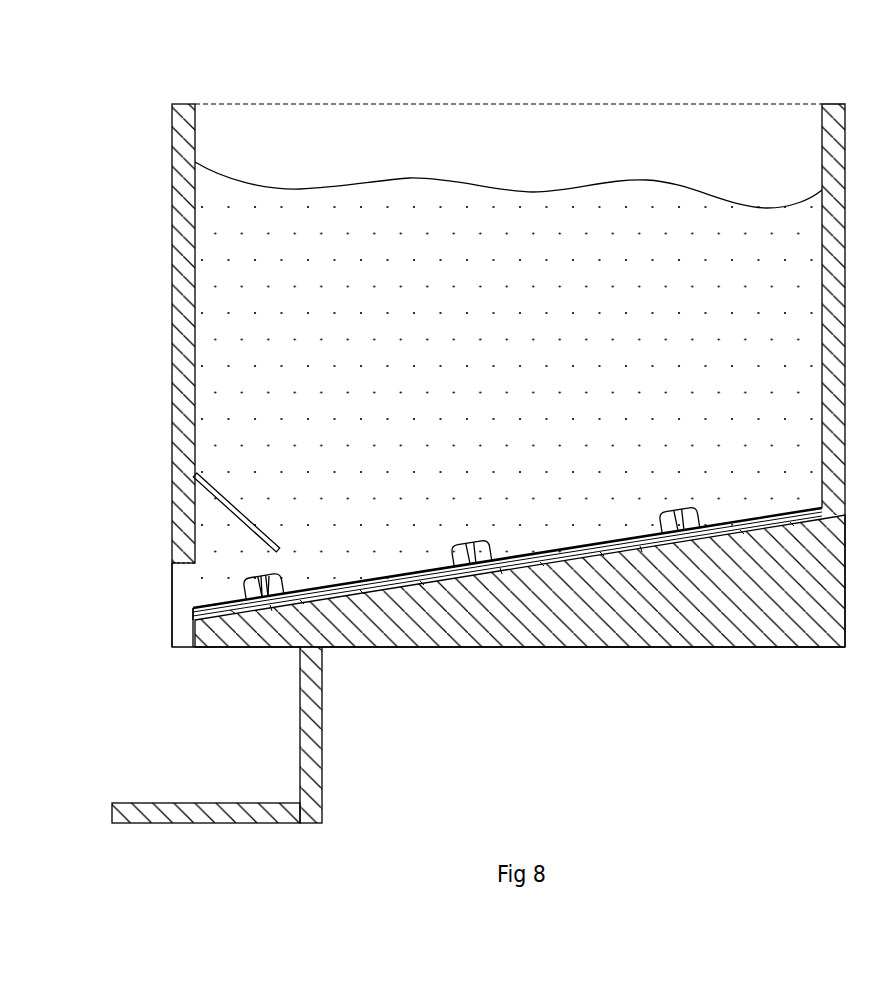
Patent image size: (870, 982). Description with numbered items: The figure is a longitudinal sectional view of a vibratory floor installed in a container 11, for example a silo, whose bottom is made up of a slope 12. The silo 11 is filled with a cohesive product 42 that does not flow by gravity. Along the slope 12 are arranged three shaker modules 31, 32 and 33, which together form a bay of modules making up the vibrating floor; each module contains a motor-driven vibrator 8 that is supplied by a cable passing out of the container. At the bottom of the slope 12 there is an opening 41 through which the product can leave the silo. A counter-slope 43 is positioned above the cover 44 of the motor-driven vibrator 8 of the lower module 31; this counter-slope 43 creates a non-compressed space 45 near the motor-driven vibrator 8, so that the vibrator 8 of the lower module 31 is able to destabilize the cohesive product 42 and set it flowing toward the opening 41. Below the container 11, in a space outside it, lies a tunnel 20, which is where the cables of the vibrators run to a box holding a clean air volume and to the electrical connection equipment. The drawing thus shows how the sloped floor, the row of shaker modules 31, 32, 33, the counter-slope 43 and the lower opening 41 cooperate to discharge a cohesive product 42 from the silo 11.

The container 11 is at (627, 123).
The cohesive product 42 is at (489, 285).
The counter-slope 43 is at (224, 490).
The non-compressed space 45 is at (218, 532).
The opening 41 is at (195, 586).
The slope 12 is at (566, 622).
The shaker module 31 is at (340, 582).
The cover 44 is at (245, 579).
The motor-driven vibrator 8 is at (271, 576).
The shaker module 32 is at (510, 551).
The shaker module 33 is at (720, 513).
The tunnel 20 is at (274, 749).